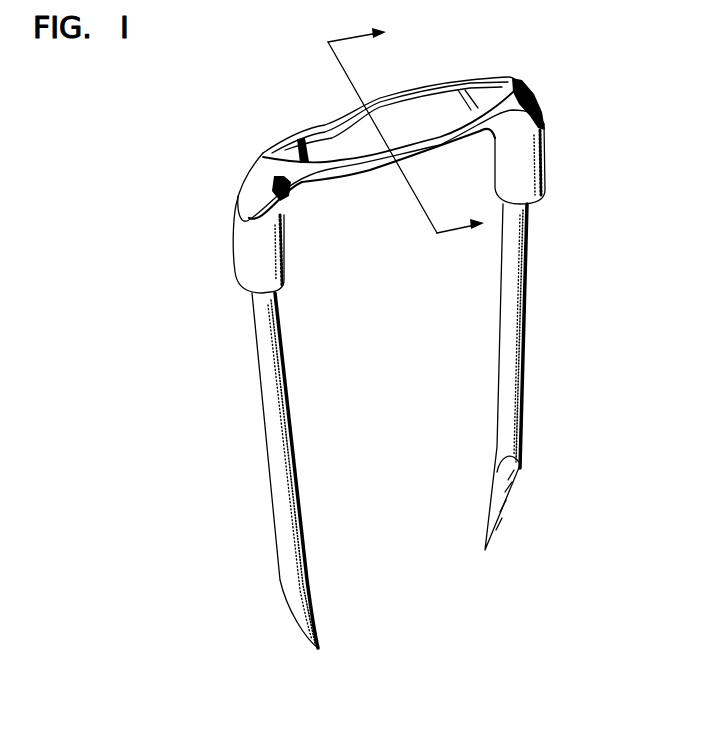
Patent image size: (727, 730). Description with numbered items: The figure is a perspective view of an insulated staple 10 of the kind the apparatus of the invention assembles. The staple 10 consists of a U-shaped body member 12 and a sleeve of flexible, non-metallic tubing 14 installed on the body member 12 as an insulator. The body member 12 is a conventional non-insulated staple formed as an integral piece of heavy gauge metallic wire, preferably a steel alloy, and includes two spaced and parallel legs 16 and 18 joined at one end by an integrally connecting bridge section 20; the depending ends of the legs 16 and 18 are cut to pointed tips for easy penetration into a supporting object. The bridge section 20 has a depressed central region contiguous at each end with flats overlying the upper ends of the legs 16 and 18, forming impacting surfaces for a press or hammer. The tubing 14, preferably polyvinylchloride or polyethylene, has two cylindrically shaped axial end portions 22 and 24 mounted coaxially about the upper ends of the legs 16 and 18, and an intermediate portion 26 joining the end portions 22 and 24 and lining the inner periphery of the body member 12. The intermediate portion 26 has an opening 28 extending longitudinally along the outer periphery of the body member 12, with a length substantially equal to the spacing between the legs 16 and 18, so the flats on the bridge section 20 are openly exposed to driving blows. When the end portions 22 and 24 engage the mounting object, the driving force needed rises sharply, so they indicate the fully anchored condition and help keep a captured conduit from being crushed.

The insulated staple 10 is at (152, 194).
The U-shaped body member 12 is at (247, 349).
The tubing 14 is at (555, 166).
The leg 16 is at (295, 487).
The leg 18 is at (510, 370).
The bridge section 20 is at (427, 110).
The axial end portion 22 is at (283, 249).
The axial end portion 24 is at (515, 190).
The intermediate portion 26 is at (355, 170).
The opening 28 is at (307, 137).